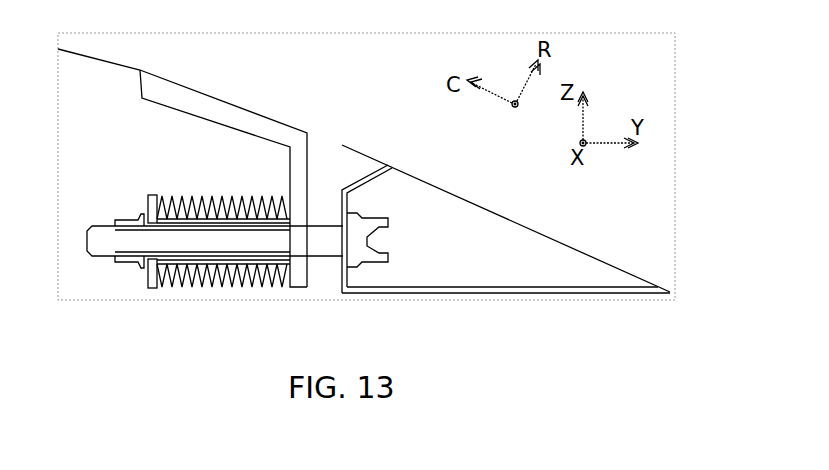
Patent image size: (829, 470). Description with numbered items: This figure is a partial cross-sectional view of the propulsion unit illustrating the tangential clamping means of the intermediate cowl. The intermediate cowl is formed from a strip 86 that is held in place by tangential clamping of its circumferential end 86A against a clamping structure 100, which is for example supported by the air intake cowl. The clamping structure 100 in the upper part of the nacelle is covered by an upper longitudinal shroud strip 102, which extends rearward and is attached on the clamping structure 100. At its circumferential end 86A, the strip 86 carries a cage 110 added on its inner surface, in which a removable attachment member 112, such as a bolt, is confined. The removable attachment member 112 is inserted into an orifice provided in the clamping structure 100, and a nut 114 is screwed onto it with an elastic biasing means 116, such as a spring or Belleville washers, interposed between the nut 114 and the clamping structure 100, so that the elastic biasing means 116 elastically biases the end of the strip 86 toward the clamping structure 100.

The upper longitudinal shroud strip 102 is at (88, 57).
The clamping structure 100 is at (197, 103).
The strip 86 is at (542, 231).
The circumferential end 86A is at (414, 178).
The cage 110 is at (463, 293).
The removable attachment member 112 is at (322, 247).
The nut 114 is at (133, 263).
The elastic biasing means 116 is at (238, 290).